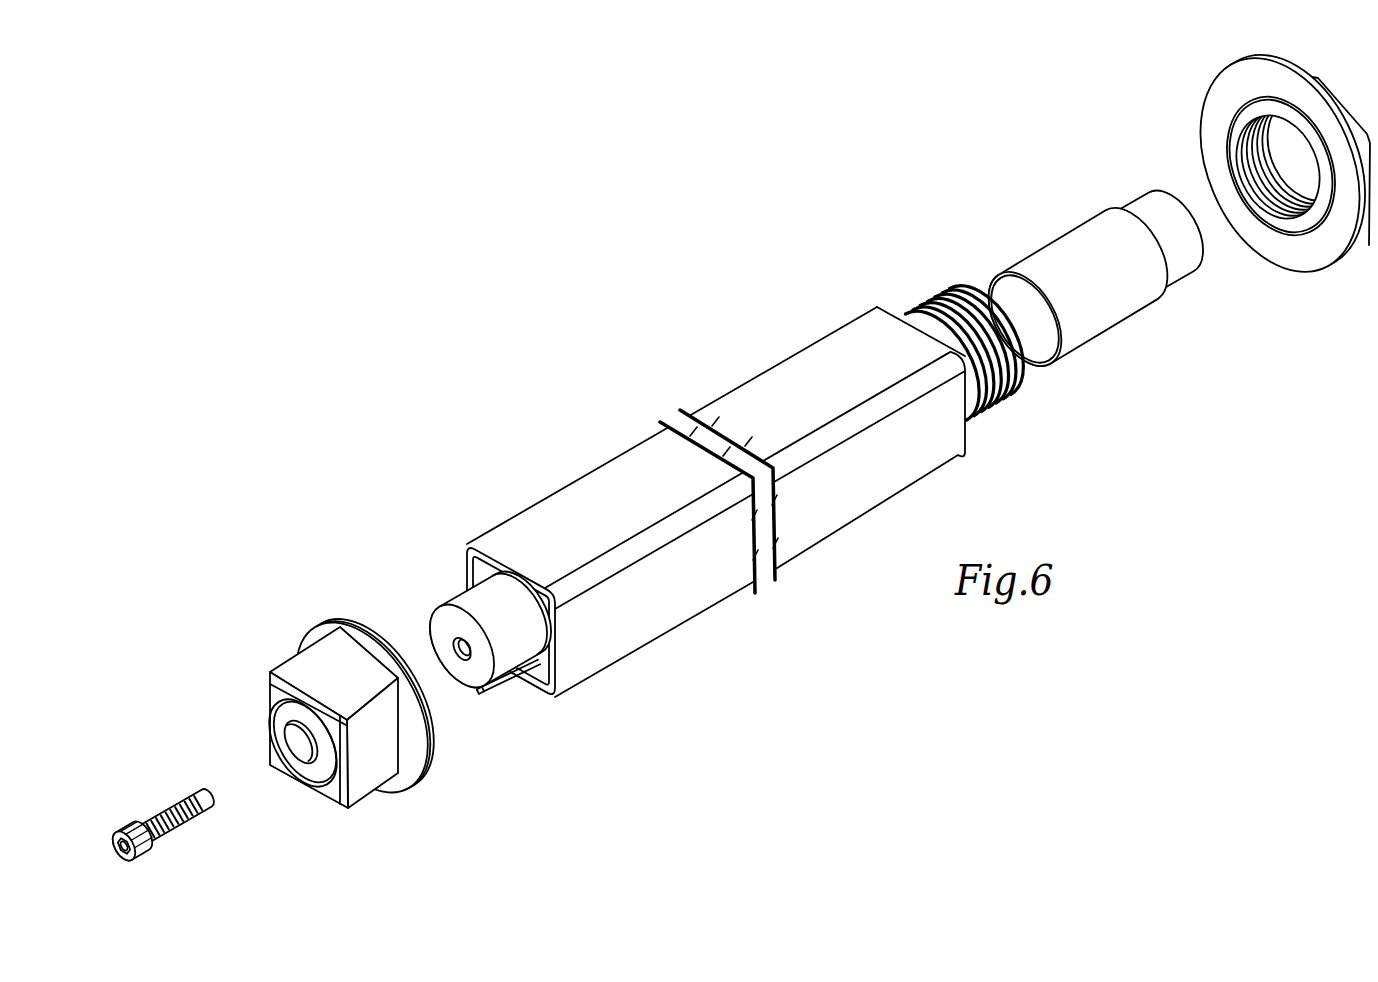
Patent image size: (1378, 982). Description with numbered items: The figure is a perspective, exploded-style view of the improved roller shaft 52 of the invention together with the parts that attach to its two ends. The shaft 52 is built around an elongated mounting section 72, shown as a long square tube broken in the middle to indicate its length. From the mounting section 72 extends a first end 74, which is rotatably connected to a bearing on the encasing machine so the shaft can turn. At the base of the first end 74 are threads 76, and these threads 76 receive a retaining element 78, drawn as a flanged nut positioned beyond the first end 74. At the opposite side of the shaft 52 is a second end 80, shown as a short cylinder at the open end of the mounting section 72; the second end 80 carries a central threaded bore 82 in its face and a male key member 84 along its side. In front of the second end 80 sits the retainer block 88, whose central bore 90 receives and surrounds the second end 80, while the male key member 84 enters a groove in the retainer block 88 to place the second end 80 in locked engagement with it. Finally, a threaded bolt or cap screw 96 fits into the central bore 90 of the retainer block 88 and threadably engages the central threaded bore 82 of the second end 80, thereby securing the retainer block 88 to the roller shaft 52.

The roller shaft 52 is at (590, 460).
The elongated mounting section 72 is at (808, 360).
The first end 74 is at (1052, 255).
The threads 76 is at (939, 302).
The retaining element 78 is at (1207, 80).
The second end 80 is at (472, 607).
The central threaded bore 82 is at (455, 653).
The male key member 84 is at (504, 692).
The retainer block 88 is at (290, 652).
The central bore 90 is at (290, 743).
The cap screw 96 is at (126, 826).